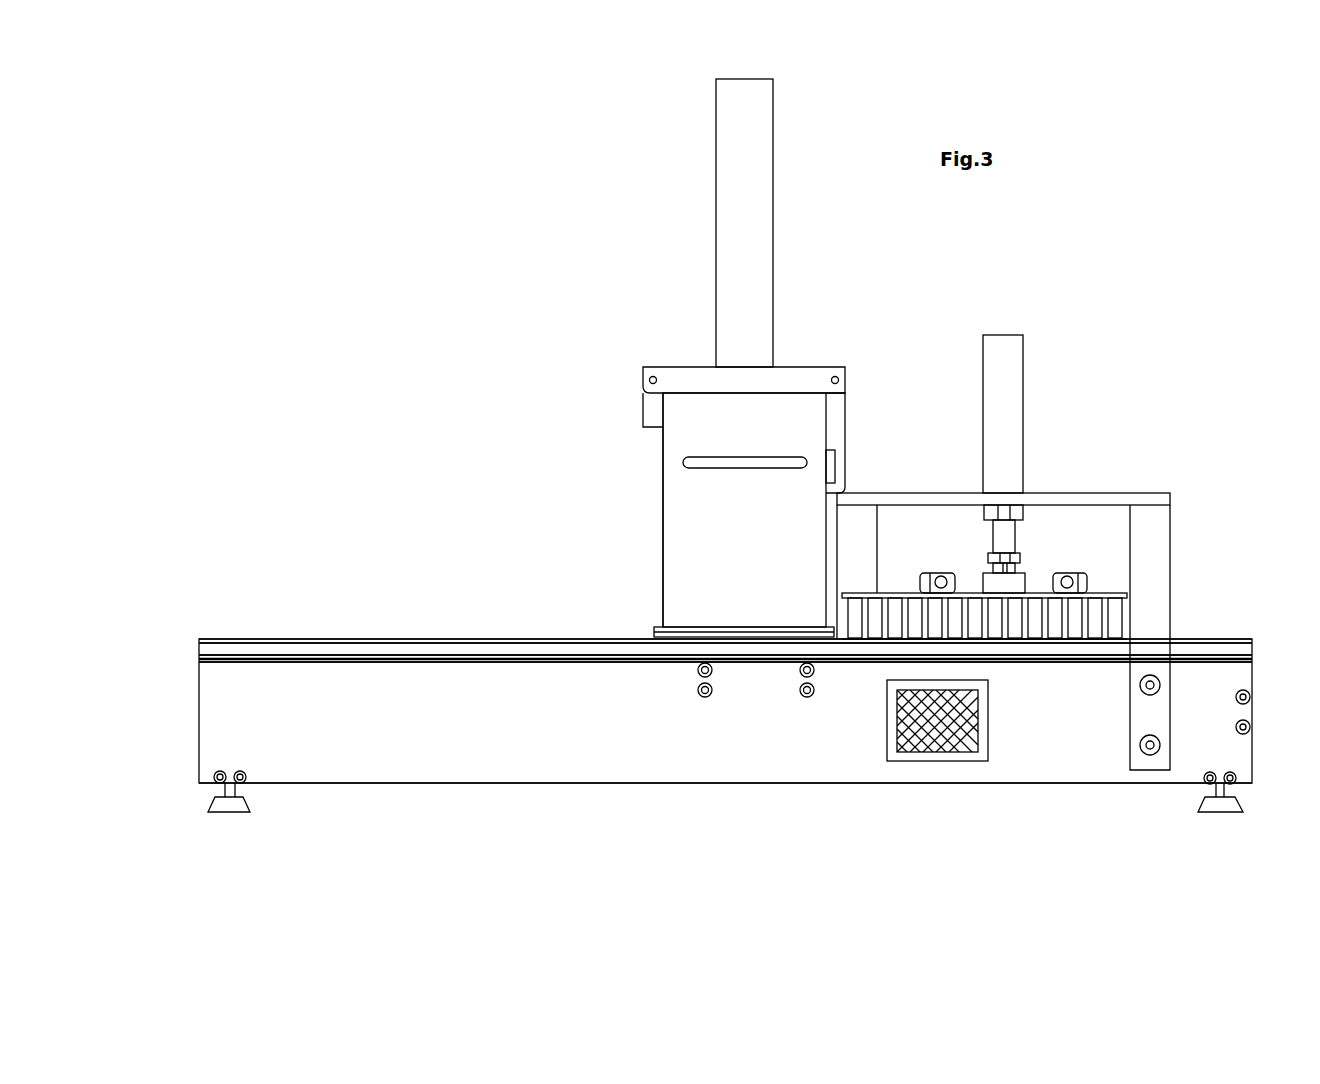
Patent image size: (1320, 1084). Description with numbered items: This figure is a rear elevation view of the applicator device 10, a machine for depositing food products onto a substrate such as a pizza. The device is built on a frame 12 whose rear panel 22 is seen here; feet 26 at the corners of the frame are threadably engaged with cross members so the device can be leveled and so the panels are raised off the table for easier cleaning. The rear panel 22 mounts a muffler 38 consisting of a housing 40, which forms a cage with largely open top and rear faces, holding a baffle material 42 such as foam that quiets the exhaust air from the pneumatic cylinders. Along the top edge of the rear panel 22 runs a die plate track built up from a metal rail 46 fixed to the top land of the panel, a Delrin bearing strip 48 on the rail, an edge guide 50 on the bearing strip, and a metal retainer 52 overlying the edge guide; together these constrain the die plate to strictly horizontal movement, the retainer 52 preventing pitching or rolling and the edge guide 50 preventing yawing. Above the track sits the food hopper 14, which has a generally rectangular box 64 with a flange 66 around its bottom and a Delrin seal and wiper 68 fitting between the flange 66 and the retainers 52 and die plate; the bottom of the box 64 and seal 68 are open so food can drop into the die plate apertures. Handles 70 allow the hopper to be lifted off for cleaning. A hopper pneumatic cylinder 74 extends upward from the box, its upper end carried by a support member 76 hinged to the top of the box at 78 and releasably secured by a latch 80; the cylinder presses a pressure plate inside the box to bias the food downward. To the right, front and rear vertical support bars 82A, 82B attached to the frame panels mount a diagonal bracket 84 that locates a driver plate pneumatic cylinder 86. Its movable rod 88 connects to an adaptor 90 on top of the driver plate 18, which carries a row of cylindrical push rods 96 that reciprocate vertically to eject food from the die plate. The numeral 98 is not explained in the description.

The applicator device 10 is at (449, 801).
The frame 12 is at (624, 784).
The food hopper 14 is at (662, 508).
The driver plate 18 is at (890, 593).
The rear panel 22 is at (595, 728).
The feet 26 is at (231, 813).
The muffler 38 is at (948, 762).
The housing 40 is at (912, 762).
The baffle material 42 is at (912, 735).
The rail 46 is at (230, 662).
The bearing strip 48 is at (307, 655).
The edge guide 50 is at (353, 650).
The retainer 52 is at (331, 639).
The box 64 is at (662, 545).
The flange 66 is at (700, 627).
The seal and wiper 68 is at (654, 633).
The handles 70 is at (733, 455).
The hopper pneumatic cylinder 74 is at (715, 203).
The support member 76 is at (675, 364).
The hinge 78 is at (643, 379).
The latch 80 is at (840, 400).
The front vertical support bar 82A is at (853, 525).
The rear vertical support bar 82B is at (1155, 640).
The diagonal bracket 84 is at (1090, 496).
The driver plate pneumatic cylinder 86 is at (1003, 335).
The movable rod 88 is at (1020, 553).
The adaptor 90 is at (1025, 573).
The push rods 96 is at (1082, 620).
The clamps 98 is at (940, 573).